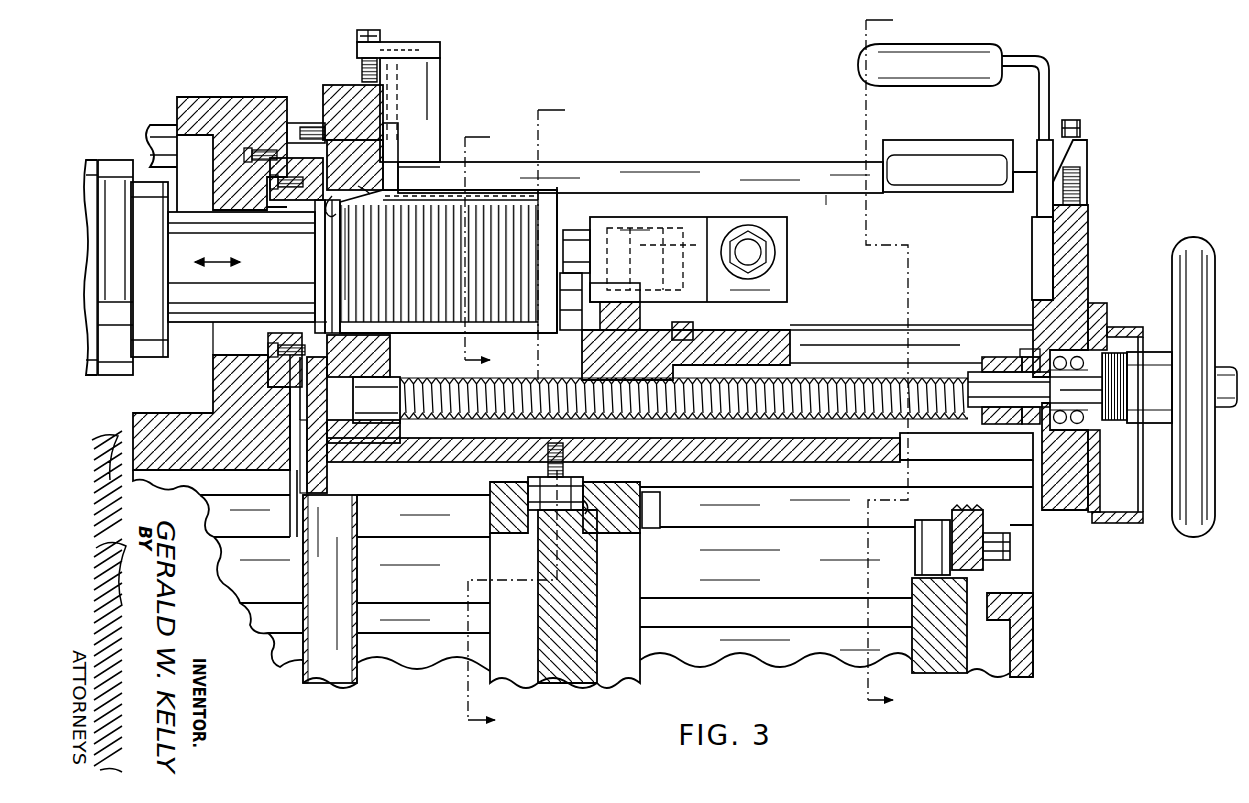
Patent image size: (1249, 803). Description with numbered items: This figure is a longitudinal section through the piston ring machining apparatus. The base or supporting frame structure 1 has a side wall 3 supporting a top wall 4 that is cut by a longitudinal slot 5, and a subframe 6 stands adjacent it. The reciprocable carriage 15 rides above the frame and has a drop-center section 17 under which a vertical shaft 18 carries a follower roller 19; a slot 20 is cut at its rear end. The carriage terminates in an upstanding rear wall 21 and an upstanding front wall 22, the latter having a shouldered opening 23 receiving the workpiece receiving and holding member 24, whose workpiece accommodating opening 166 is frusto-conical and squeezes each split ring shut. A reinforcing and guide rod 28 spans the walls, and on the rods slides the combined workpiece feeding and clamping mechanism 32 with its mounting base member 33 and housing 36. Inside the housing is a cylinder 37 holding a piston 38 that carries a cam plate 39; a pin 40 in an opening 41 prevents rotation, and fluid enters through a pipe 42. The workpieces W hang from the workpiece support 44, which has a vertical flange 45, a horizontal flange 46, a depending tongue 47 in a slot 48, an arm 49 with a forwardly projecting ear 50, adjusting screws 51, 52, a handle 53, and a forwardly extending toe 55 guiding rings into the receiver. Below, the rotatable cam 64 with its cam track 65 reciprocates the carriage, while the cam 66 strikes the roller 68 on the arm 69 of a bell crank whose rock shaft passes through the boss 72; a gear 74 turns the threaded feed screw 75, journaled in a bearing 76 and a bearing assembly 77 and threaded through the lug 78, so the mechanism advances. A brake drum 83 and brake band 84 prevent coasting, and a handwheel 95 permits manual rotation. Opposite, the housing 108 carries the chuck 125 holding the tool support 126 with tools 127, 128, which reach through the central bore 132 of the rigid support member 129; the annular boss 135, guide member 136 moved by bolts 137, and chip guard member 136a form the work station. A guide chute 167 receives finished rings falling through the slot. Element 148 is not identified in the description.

The base or supporting frame structure 1 is at (1037, 652).
The side wall 3 is at (801, 668).
The top wall 4 is at (1025, 592).
The longitudinal slot 5 is at (799, 604).
The subframe 6 is at (486, 248).
The reciprocable carriage 15 is at (1100, 248).
The drop-center section 17 is at (790, 444).
The vertical shaft 18 is at (528, 480).
The follower roller 19 is at (592, 476).
The slot 20 is at (948, 442).
The upstanding rear wall 21 is at (1089, 290).
The upstanding front wall 22 is at (386, 93).
The shouldered opening 23 is at (398, 146).
The workpiece receiving and holding member 24 is at (400, 173).
The reinforcing and guide rod 28 is at (852, 328).
The combined workpiece feeding and clamping mechanism 32 is at (750, 210).
The mounting base member 33 is at (791, 330).
The housing 36 is at (646, 217).
The cylinder 37 is at (678, 228).
The piston 38 is at (579, 230).
The cam plate 39 is at (557, 190).
The pin 40 is at (592, 308).
The opening 41 is at (630, 324).
The pipe 42 is at (760, 256).
The workpiece support 44 is at (920, 140).
The vertical flange 45 is at (836, 164).
The horizontal flange 46 is at (828, 202).
The depending tongue 47 is at (1036, 200).
The slot 48 is at (1032, 263).
The arm 49 is at (452, 96).
The forwardly projecting ear 50 is at (396, 42).
The adjusting screw 51 is at (1091, 176).
The adjusting screw 52 is at (358, 64).
The handle 53 is at (989, 48).
The forwardly extending toe 55 is at (356, 176).
The rotatable cam 64 is at (597, 569).
The cam track 65 is at (586, 514).
The cam 66 is at (912, 644).
The roller 68 is at (914, 564).
The arm 69 is at (990, 512).
The boss 72 is at (1116, 526).
The gear 74 is at (1133, 328).
The threaded feed screw 75 is at (852, 364).
The bearing 76 is at (401, 378).
The bearing assembly 77 is at (1042, 352).
The threaded lug 78 is at (670, 428).
The brake drum 83 is at (966, 356).
The brake band 84 is at (998, 356).
The handwheel 95 is at (1196, 248).
The housing 108 is at (94, 156).
The chuck 125 is at (160, 340).
The tool support 126 is at (262, 278).
The tool 127 is at (332, 210).
The tool 128 is at (323, 314).
The rigid support member 129 is at (242, 94).
The central bore 132 is at (226, 184).
The annular boss 135 is at (262, 341).
The guide member 136 is at (302, 408).
The chip guard member 136a is at (306, 127).
The bolt 137 is at (268, 352).
The feed rod 148 is at (162, 123).
The workpiece accommodating opening 166 is at (343, 214).
The guide chute 167 is at (360, 574).
The workpieces W is at (468, 196).